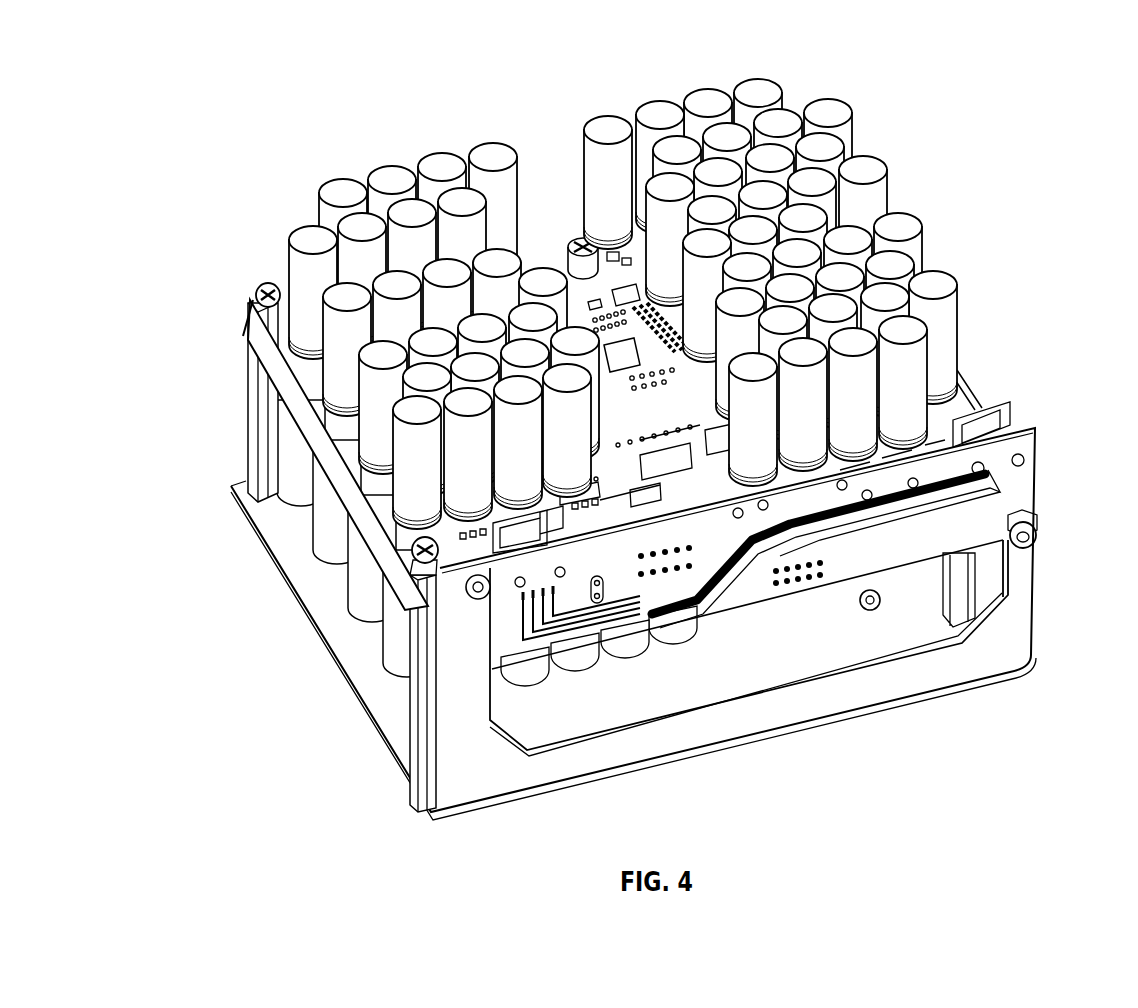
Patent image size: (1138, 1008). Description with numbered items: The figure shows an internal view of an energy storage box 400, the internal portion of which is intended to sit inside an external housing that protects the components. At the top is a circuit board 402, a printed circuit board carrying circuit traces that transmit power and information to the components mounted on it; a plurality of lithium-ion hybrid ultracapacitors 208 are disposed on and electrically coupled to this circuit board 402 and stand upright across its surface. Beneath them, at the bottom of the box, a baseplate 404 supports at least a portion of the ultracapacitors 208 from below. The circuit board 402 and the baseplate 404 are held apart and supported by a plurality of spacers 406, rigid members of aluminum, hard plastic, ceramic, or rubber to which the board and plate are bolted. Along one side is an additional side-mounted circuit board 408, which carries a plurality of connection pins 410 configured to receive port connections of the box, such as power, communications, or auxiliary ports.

The energy storage box 400 is at (244, 65).
The lithium-ion hybrid ultracapacitors 208 is at (332, 178).
The circuit board 402 is at (243, 340).
The baseplate 404 is at (310, 625).
The spacers 406 is at (256, 297).
The side-mounted circuit board 408 is at (1038, 507).
The connection pins 410 is at (678, 577).